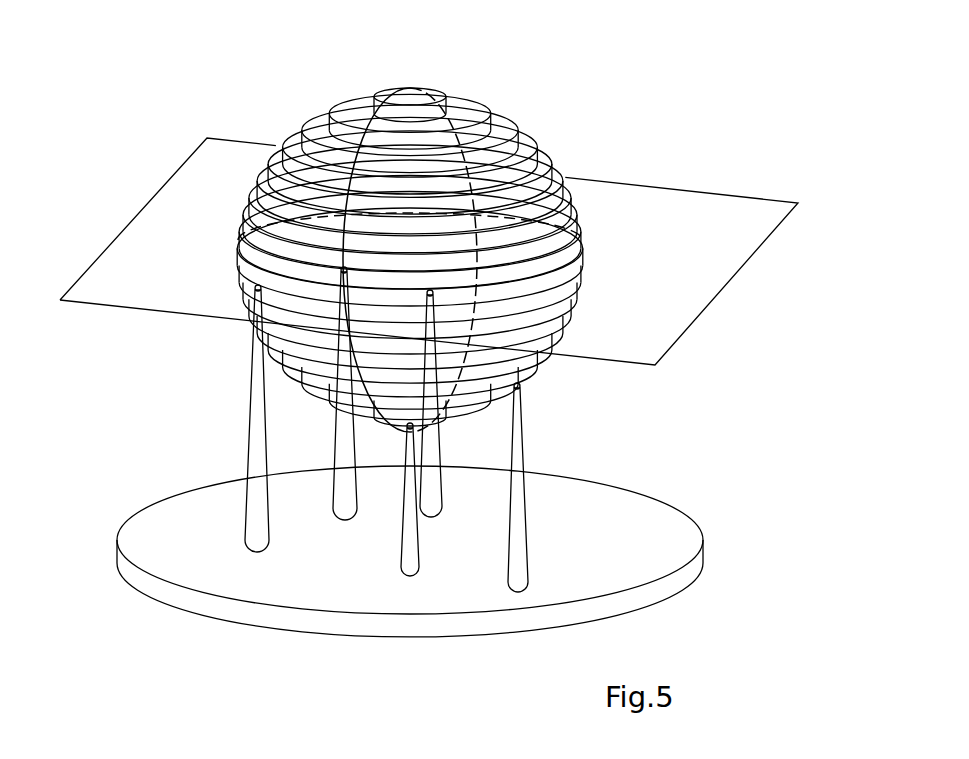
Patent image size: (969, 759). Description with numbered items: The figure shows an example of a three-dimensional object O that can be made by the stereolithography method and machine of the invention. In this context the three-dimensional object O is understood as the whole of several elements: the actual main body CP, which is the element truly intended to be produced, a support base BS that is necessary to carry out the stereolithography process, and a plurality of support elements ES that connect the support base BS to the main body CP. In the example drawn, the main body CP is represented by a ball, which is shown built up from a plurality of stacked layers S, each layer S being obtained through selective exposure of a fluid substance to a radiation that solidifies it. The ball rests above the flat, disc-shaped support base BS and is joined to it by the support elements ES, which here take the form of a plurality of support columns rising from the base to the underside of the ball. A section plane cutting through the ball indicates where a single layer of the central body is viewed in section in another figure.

The three-dimensional object O is at (570, 118).
The main body CP is at (243, 167).
The layer S is at (265, 220).
The support base BS is at (123, 572).
The support elements ES is at (343, 502).